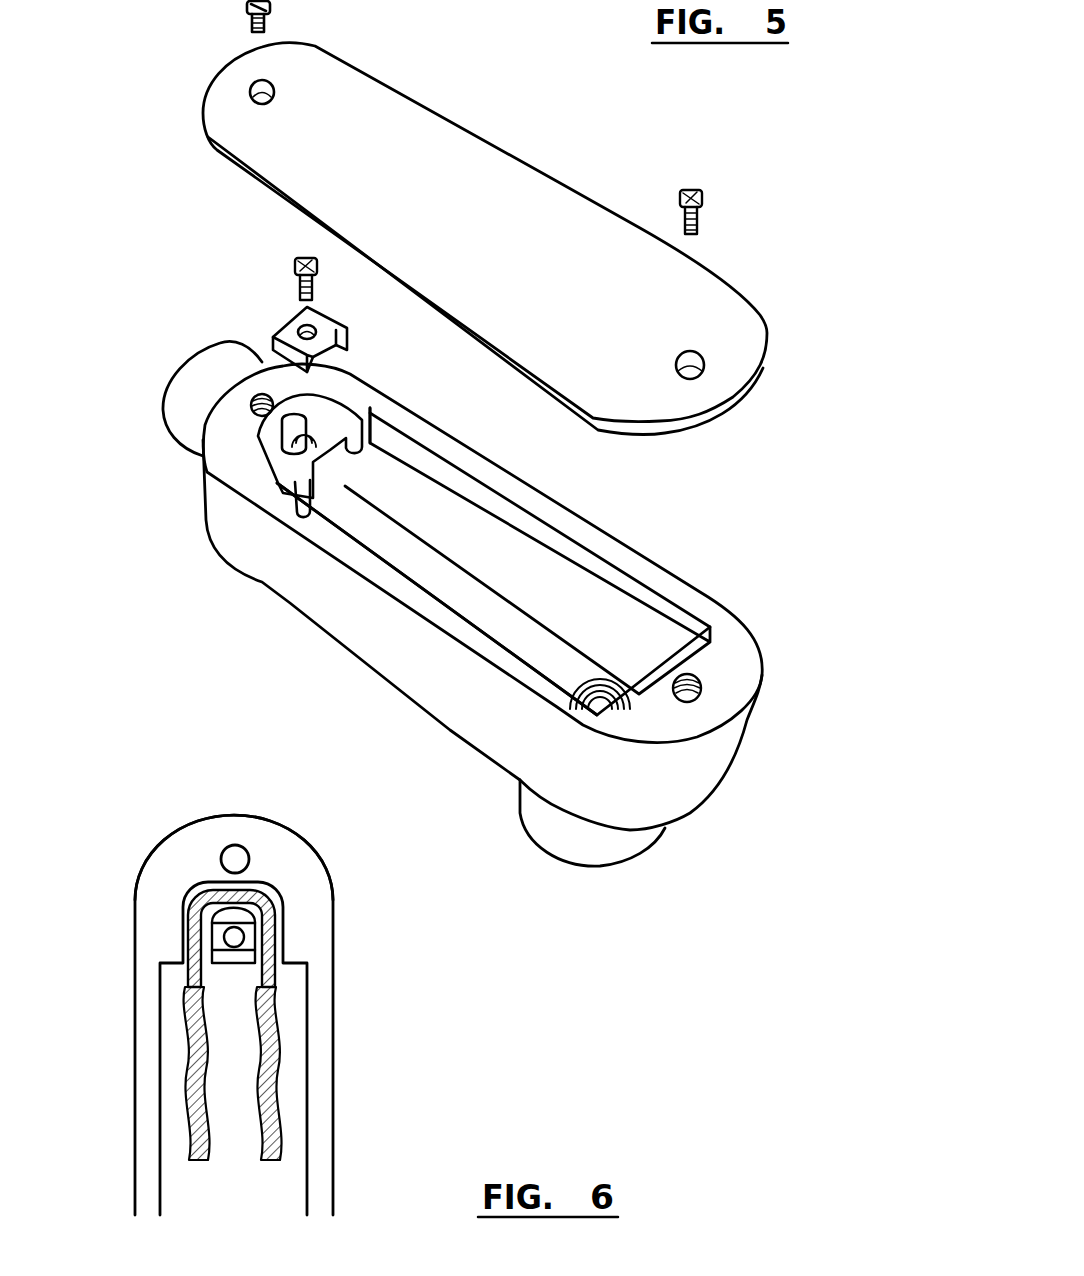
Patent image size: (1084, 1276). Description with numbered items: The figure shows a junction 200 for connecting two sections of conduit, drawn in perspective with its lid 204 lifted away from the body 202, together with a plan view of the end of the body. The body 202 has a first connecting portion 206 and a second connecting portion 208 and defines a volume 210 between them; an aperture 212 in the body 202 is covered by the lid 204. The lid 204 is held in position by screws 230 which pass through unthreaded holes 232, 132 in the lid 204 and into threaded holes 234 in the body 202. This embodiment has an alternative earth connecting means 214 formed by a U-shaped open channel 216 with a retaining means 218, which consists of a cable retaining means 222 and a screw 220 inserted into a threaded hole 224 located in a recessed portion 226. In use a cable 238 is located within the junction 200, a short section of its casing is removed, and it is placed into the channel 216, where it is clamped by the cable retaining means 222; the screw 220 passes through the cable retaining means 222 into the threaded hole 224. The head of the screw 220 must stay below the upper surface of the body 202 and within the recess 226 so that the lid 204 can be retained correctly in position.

In FIG. 5, the unthreaded hole 132 is at (697, 374).
In FIG. 5, the junction 200 is at (410, 708).
In FIG. 6, the junction 200 is at (348, 976).
In FIG. 5, the body 202 is at (693, 773).
In FIG. 6, the body 202 is at (290, 868).
In FIG. 5, the lid 204 is at (490, 217).
In FIG. 5, the first connecting portion 206 is at (202, 382).
In FIG. 5, the second connecting portion 208 is at (607, 847).
In FIG. 5, the volume 210 is at (565, 602).
In FIG. 5, the aperture 212 is at (413, 584).
In FIG. 6, the aperture 212 is at (305, 1193).
In FIG. 5, the earth connecting means 214 is at (288, 247).
In FIG. 5, the U-shaped open channel 216 is at (307, 492).
In FIG. 6, the U-shaped open channel 216 is at (190, 908).
In FIG. 5, the retaining means 218 is at (343, 352).
In FIG. 5, the screw 220 is at (296, 267).
In FIG. 5, the cable retaining means 222 is at (287, 323).
In FIG. 5, the threaded hole 224 is at (290, 422).
In FIG. 5, the recessed portion 226 is at (292, 463).
In FIG. 6, the recessed portion 226 is at (233, 935).
In FIG. 5, the screw 230 is at (702, 192).
In FIG. 5, the unthreaded hole 232 is at (250, 85).
In FIG. 5, the threaded hole 234 is at (250, 413).
In FIG. 6, the threaded hole 234 is at (235, 853).
In FIG. 6, the cable 238 is at (278, 1108).